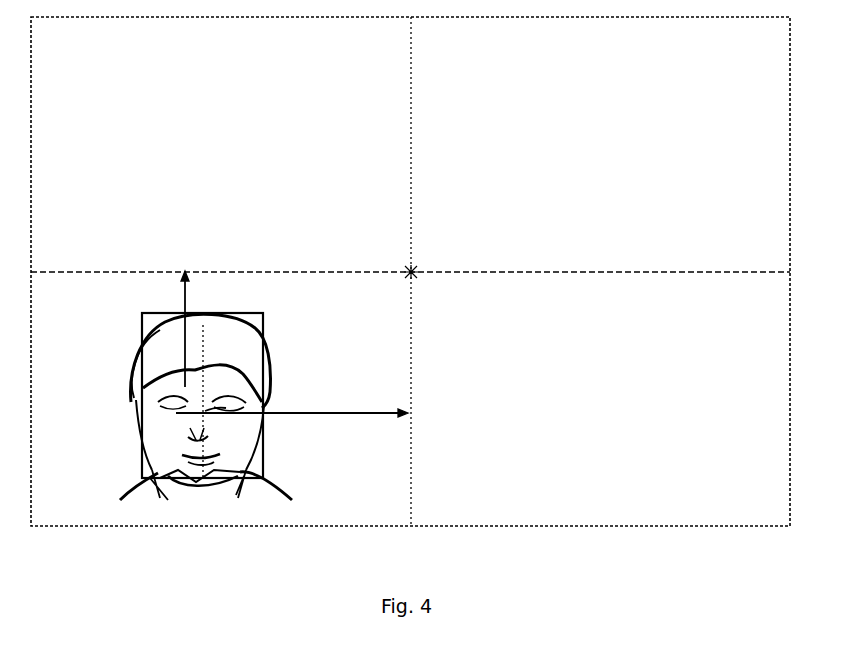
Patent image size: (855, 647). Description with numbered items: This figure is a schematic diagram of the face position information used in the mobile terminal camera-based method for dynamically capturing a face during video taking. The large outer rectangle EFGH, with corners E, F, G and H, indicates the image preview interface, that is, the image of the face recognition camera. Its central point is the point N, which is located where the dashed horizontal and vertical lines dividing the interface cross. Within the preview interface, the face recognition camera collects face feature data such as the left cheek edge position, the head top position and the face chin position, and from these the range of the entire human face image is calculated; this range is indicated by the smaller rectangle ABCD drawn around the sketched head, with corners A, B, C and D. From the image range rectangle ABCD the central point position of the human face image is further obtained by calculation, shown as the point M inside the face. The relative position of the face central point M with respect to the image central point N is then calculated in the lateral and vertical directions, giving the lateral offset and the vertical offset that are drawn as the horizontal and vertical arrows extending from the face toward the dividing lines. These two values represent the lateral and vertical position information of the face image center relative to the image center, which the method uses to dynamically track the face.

The image preview interface rectangle corner E is at (47, 39).
The image preview interface rectangle corner F is at (766, 39).
The image preview interface rectangle corner G is at (41, 544).
The image preview interface rectangle corner H is at (780, 544).
The central point of the image N is at (417, 263).
The face image range rectangle corner A is at (124, 302).
The face image range rectangle corner B is at (270, 302).
The face image range rectangle corner C is at (124, 469).
The face image range rectangle corner D is at (281, 469).
The central point of the face image M is at (233, 335).